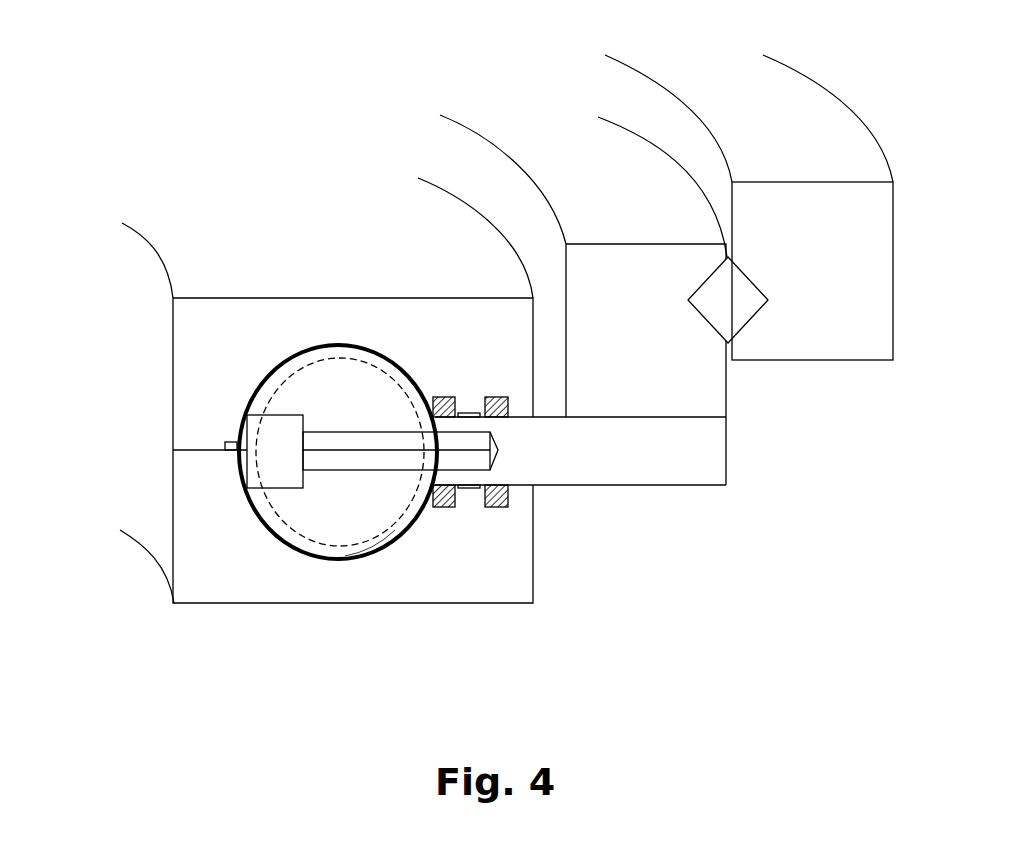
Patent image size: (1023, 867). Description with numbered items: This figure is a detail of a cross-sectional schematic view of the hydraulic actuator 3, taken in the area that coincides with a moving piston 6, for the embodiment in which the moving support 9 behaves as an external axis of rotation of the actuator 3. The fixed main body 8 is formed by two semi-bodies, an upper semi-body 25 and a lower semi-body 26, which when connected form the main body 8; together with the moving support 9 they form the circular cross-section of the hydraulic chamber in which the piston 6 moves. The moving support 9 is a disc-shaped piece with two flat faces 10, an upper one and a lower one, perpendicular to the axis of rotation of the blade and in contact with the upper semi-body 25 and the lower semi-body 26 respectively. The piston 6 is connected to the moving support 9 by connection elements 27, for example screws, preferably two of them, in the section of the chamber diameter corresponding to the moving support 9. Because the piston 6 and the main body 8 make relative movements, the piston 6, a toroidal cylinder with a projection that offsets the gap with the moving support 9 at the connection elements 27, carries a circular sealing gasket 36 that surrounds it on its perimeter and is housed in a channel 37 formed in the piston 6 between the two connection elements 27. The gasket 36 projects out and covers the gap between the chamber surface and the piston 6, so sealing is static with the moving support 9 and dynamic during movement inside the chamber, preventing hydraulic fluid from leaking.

The actuator 3 is at (880, 575).
The piston 6 is at (342, 387).
The fixed main body 8 is at (128, 447).
The moving support 9 is at (640, 573).
The flat faces 10 is at (637, 417).
The upper semi-body 25 is at (227, 323).
The lower semi-body 26 is at (210, 563).
The connection elements 27 is at (330, 447).
The circular sealing gasket 36 is at (392, 357).
The channel 37 is at (392, 532).